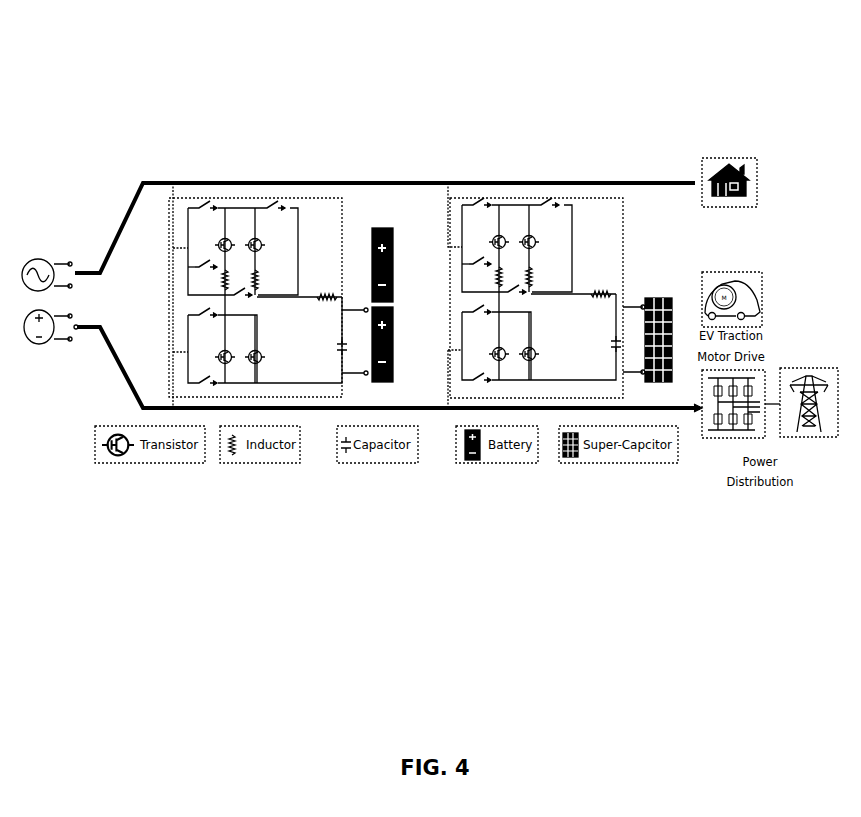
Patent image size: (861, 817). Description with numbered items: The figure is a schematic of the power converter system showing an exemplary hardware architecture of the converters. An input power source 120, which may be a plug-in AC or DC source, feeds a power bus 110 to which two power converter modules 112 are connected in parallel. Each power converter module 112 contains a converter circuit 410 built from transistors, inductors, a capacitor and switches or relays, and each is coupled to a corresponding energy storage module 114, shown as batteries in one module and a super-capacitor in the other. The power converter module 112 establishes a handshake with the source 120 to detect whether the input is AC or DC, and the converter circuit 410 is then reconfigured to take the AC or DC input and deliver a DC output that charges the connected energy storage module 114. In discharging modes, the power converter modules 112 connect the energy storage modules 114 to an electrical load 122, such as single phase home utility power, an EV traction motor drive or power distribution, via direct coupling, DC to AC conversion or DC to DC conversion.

The power bus 110 is at (428, 183).
The power converter module 112 is at (407, 218).
The energy storage module 114 is at (375, 228).
The input power source 120 is at (38, 258).
The electrical load 122 is at (723, 143).
The converter circuit 410 is at (235, 212).